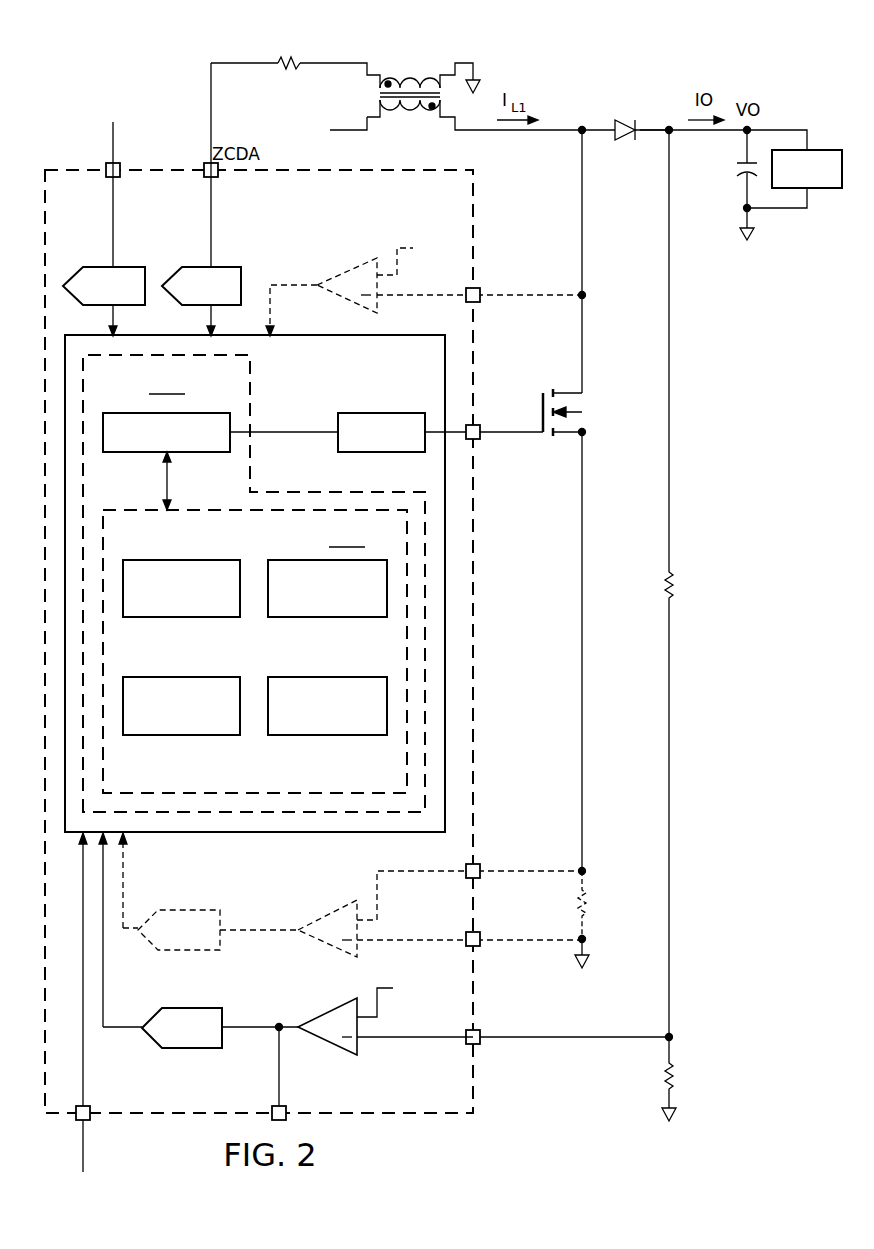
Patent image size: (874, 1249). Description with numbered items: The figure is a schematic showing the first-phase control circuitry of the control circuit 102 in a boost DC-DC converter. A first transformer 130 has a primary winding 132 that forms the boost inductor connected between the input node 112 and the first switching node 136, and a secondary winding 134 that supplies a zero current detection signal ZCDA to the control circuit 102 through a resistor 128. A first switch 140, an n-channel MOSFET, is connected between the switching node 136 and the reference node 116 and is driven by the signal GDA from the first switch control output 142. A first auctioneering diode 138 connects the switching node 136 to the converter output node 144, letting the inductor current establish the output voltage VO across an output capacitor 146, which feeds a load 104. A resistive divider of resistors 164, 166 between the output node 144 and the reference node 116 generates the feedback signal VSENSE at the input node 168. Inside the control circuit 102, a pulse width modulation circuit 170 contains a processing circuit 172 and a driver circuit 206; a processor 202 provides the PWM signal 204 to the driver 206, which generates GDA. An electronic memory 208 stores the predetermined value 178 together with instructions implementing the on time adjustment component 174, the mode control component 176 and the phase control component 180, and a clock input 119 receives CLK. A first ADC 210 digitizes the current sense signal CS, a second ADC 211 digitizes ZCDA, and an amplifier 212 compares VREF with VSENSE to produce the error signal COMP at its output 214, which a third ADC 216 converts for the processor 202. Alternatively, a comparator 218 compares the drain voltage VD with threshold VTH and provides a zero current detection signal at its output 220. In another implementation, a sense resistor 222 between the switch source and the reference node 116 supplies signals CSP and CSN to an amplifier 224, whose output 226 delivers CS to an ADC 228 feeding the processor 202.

The control circuit 102 is at (172, 166).
The load 104 is at (820, 148).
The input node 112 is at (110, 140).
The reference node 116 is at (753, 238).
The clock input 119 is at (75, 1124).
The resistor 128 is at (288, 58).
The first transformer 130 is at (474, 80).
The primary winding 132 is at (405, 110).
The secondary winding 134 is at (418, 82).
The first switching node 136 is at (580, 128).
The first auctioneering diode 138 is at (633, 118).
The first switch 140 is at (541, 398).
The first switch control output 142 is at (513, 440).
The converter output node 144 is at (653, 136).
The output capacitor 146 is at (735, 168).
The resistor 164 is at (672, 585).
The resistor 166 is at (672, 1075).
The input node 168 is at (569, 1040).
The pulse width modulation circuit 170 is at (233, 843).
The processing circuit 172 is at (254, 583).
The on time adjustment component 174 is at (181, 618).
The mode control component 176 is at (330, 618).
The predetermined value 178 is at (182, 736).
The phase control component 180 is at (330, 736).
The processor 202 is at (140, 455).
The PWM signal 204 is at (295, 436).
The driver circuit 206 is at (385, 412).
The electronic memory 208 is at (255, 651).
The first analog to digital converter circuit 210 is at (96, 267).
The second ADC 211 is at (192, 267).
The amplifier 212 is at (327, 1042).
The output 214 is at (251, 1031).
The third ADC 216 is at (186, 1050).
The comparator 218 is at (348, 270).
The output 220 is at (291, 283).
The sense resistor 222 is at (586, 905).
The amplifier 224 is at (334, 912).
The output 226 is at (262, 933).
The ADC 228 is at (187, 952).